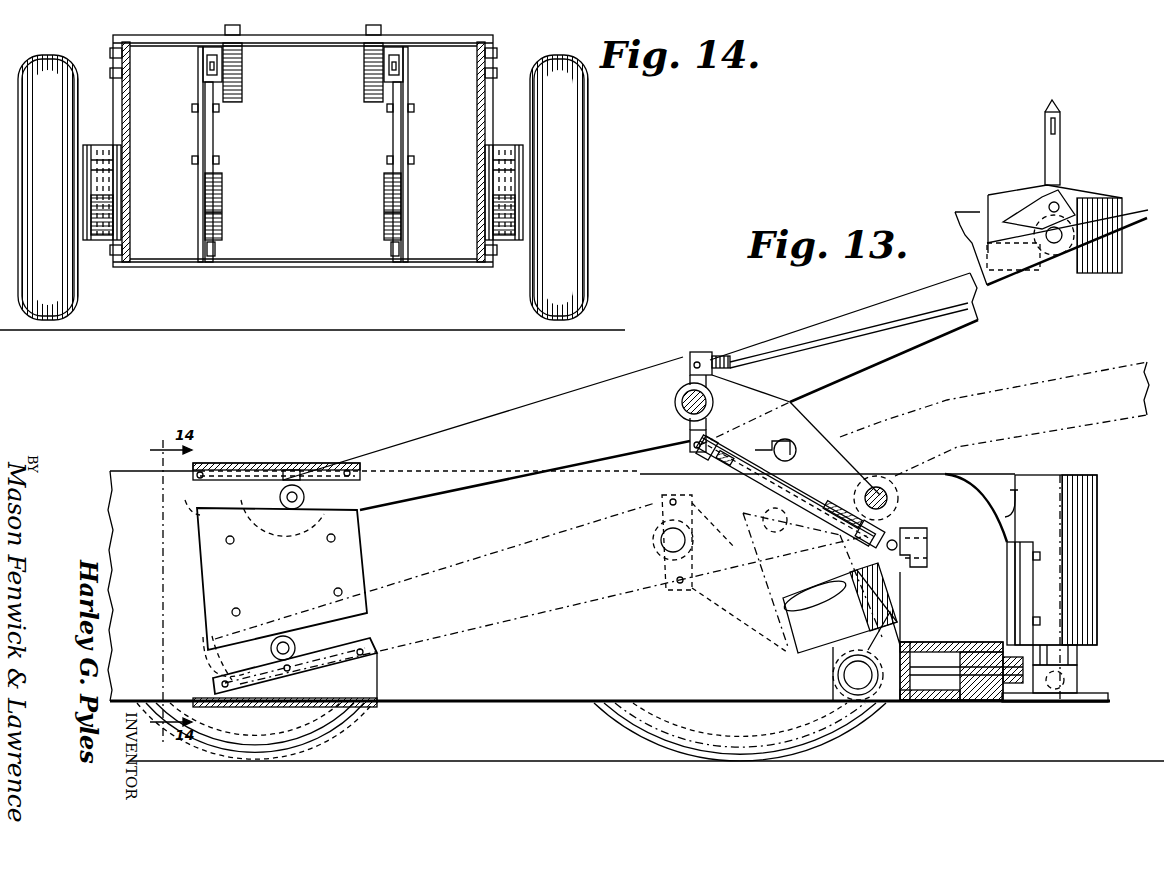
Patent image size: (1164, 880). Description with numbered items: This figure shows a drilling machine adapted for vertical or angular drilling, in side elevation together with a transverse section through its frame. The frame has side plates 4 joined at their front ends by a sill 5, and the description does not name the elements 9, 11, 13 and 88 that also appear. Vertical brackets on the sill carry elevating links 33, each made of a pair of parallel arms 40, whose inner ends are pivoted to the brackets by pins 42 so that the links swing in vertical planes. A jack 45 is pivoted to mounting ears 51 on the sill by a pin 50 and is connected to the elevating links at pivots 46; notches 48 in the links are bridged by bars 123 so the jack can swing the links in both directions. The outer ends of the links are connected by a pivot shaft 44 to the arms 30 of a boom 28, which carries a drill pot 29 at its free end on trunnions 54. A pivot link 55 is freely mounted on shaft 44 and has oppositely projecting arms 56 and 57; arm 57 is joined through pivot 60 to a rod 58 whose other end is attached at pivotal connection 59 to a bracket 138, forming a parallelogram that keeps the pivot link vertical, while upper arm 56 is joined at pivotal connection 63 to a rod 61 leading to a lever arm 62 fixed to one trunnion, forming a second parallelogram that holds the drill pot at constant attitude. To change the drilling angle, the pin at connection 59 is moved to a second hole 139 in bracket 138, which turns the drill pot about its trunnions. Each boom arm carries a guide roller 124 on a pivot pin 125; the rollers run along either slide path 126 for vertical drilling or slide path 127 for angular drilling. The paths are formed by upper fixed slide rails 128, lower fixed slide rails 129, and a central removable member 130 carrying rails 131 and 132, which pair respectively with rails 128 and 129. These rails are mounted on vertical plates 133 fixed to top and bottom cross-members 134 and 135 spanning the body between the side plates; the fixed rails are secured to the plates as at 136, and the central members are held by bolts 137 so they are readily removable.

In FIG. 14, the side plates 4 is at (122, 108).
In FIG. 13, the side plates 4 is at (562, 703).
In FIG. 13, the sill 5 is at (950, 642).
In FIG. 14, the front wheel 9 is at (74, 308).
In FIG. 13, the front wheel 9 is at (300, 733).
In FIG. 13, the axle bolt 11 is at (935, 700).
In FIG. 13, the rear wheel 13 is at (805, 728).
In FIG. 13, the boom 28 is at (876, 304).
In FIG. 13, the drill pot 29 is at (1090, 190).
In FIG. 13, the boom arms 30 is at (487, 415).
In FIG. 13, the elevating link 33 is at (836, 425).
In FIG. 13, the parallel arms 40 is at (763, 400).
In FIG. 13, the pins 42 is at (879, 487).
In FIG. 13, the pivot shaft 44 is at (679, 397).
In FIG. 13, the jack 45 is at (783, 605).
In FIG. 13, the pivots 46 is at (786, 438).
In FIG. 13, the notches 48 is at (795, 466).
In FIG. 13, the pin 50 is at (838, 675).
In FIG. 13, the mounting ears 51 is at (900, 635).
In FIG. 13, the trunnions 54 is at (1048, 242).
In FIG. 13, the pivot link 55 is at (668, 403).
In FIG. 13, the upper arm 56 is at (716, 354).
In FIG. 13, the arm 57 is at (690, 433).
In FIG. 13, the rod 58 is at (748, 458).
In FIG. 13, the pivotal connection 59 is at (852, 585).
In FIG. 13, the pivot 60 is at (690, 450).
In FIG. 13, the rod 61 is at (820, 340).
In FIG. 13, the lever arm 62 is at (1075, 215).
In FIG. 13, the pivotal connection 63 is at (690, 352).
In FIG. 13, the motor housing 88 is at (1097, 615).
In FIG. 13, the bars 123 is at (700, 512).
In FIG. 14, the guide roller 124 is at (246, 60).
In FIG. 13, the guide roller 124 is at (305, 477).
In FIG. 14, the pivot pins 125 is at (210, 68).
In FIG. 13, the pivot pins 125 is at (304, 497).
In FIG. 14, the slide path 126 is at (207, 62).
In FIG. 13, the slide path 126 is at (228, 496).
In FIG. 14, the slide path 127 is at (222, 225).
In FIG. 13, the slide path 127 is at (368, 632).
In FIG. 14, the upper fixed slide rails 128 is at (205, 48).
In FIG. 13, the upper fixed slide rails 128 is at (288, 480).
In FIG. 14, the lower fixed slide rails 129 is at (215, 250).
In FIG. 13, the lower fixed slide rails 129 is at (377, 662).
In FIG. 14, the central removable member 130 is at (213, 133).
In FIG. 13, the central removable member 130 is at (362, 548).
In FIG. 14, the rails 131 is at (219, 108).
In FIG. 13, the rails 131 is at (184, 501).
In FIG. 14, the rails 132 is at (222, 192).
In FIG. 13, the rails 132 is at (212, 636).
In FIG. 14, the vertical plates 133 is at (198, 140).
In FIG. 14, the top cross-member 134 is at (345, 43).
In FIG. 13, the top cross-member 134 is at (240, 463).
In FIG. 14, the bottom cross-member 135 is at (285, 268).
In FIG. 13, the bottom cross-member 135 is at (362, 707).
In FIG. 13, the fastening 136 is at (349, 470).
In FIG. 14, the bolts 137 is at (192, 164).
In FIG. 13, the bolts 137 is at (326, 540).
In FIG. 13, the bracket 138 is at (896, 540).
In FIG. 13, the second hole 139 is at (927, 545).